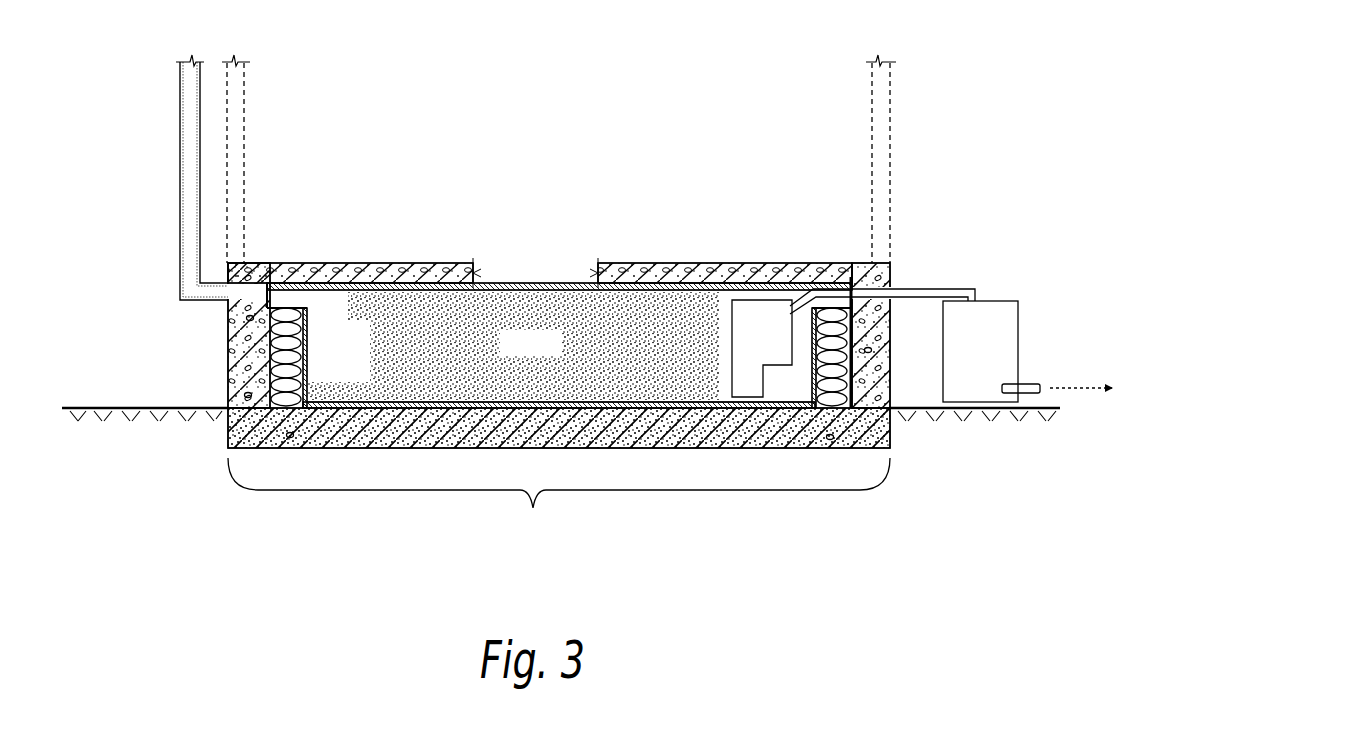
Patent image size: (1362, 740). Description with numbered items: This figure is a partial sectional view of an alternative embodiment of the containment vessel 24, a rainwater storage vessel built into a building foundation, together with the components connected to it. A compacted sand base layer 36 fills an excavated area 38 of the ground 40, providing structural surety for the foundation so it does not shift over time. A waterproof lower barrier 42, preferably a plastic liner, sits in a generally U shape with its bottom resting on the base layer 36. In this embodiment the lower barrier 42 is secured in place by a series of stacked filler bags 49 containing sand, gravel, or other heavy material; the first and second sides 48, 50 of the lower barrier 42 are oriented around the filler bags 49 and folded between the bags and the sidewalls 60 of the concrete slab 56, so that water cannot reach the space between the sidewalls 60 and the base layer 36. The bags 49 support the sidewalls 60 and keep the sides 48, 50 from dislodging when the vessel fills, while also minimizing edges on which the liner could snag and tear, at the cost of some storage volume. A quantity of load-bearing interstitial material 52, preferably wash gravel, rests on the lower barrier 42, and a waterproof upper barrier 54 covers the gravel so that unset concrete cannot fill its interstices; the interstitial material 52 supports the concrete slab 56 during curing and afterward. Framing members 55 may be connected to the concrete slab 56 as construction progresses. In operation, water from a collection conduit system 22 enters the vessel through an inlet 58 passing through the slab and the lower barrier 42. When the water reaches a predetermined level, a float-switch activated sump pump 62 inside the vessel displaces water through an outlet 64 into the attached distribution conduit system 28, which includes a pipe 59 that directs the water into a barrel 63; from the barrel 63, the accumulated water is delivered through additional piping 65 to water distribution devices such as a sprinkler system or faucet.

The collection conduit system 22 is at (178, 133).
The containment vessel 24 is at (535, 281).
The distribution conduit system 28 is at (1030, 275).
The compacted sand base layer 36 is at (657, 448).
The excavated area 38 is at (559, 501).
The ground 40 is at (561, 444).
The waterproof lower barrier 42 is at (337, 402).
The first side of the lower barrier 48 is at (306, 332).
The filler bags 49 is at (248, 330).
The second side of the lower barrier 50 is at (812, 358).
The load-bearing interstitial material 52 is at (514, 346).
The waterproof upper barrier 54 is at (332, 284).
The framing members 55 is at (244, 111).
The concrete slab 56 is at (410, 264).
The inlet 58 is at (275, 294).
The pipe 59 is at (922, 289).
The sidewalls of the concrete slab 60 is at (236, 362).
The float-switch activated sump pump 62 is at (762, 348).
The barrel 63 is at (980, 351).
The outlet 64 is at (849, 278).
The additional piping 65 is at (1030, 384).